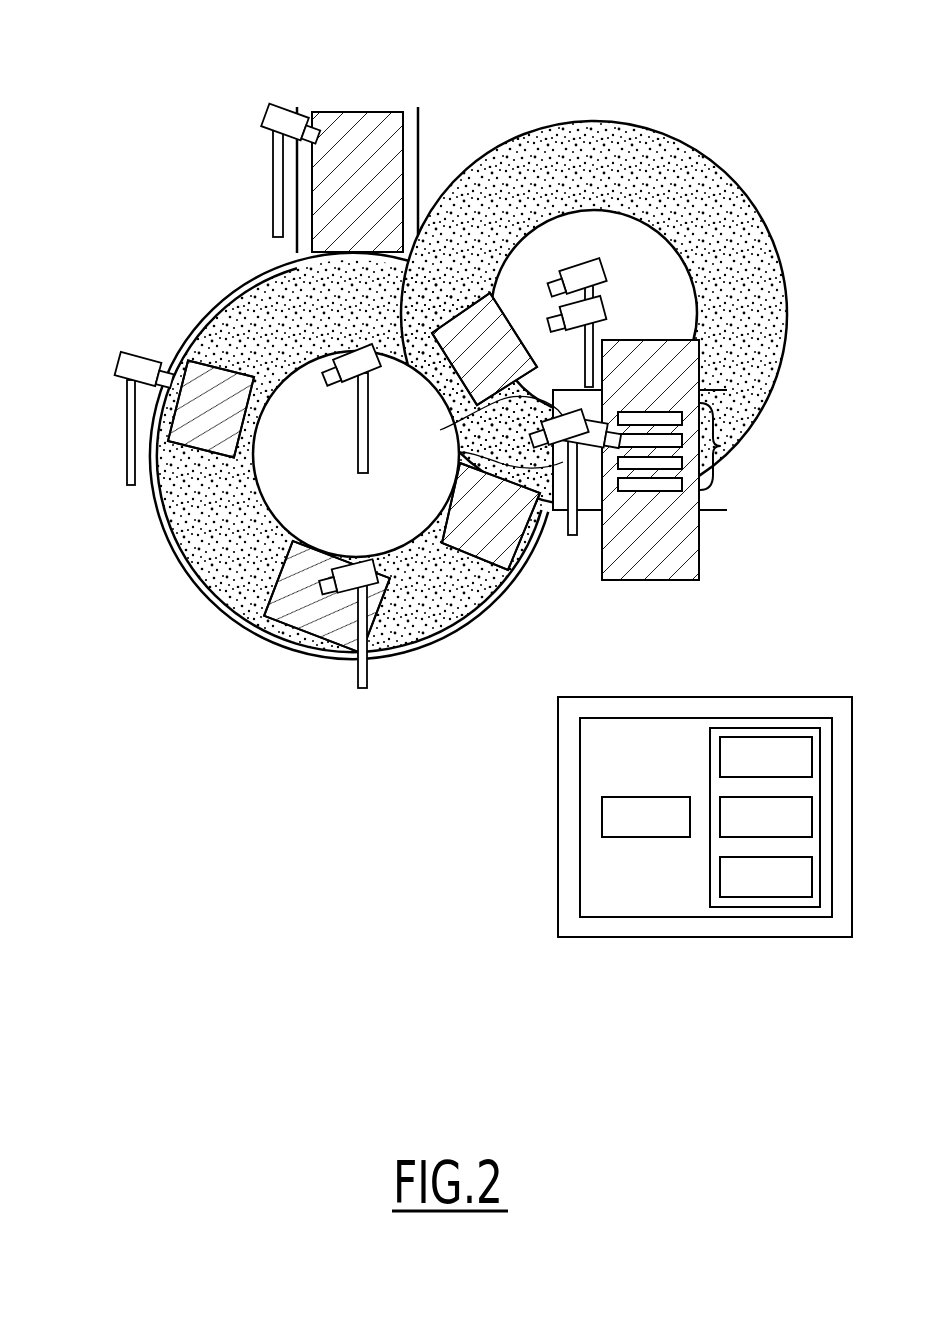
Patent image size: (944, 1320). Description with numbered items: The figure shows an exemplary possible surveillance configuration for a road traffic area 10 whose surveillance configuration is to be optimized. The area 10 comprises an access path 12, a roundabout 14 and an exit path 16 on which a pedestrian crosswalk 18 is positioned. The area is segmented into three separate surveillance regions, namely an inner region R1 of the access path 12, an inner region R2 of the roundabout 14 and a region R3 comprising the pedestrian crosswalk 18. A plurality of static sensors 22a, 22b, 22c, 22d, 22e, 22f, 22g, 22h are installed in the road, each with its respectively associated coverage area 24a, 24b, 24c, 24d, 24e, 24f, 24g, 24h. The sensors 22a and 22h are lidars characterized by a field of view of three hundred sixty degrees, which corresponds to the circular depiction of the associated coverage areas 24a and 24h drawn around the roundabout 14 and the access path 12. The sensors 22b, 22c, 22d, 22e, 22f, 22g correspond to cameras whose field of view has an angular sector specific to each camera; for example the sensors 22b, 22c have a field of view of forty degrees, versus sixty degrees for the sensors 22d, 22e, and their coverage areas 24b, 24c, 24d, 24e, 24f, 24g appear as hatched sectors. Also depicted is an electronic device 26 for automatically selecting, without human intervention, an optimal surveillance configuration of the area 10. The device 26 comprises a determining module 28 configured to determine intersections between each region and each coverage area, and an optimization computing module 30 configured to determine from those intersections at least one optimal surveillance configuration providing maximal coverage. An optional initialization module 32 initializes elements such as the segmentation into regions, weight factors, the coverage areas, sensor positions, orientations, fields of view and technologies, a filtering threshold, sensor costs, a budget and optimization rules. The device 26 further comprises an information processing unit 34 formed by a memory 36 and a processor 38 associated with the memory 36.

The road traffic area 10 is at (419, 357).
The access path 12 is at (418, 152).
The roundabout 14 is at (190, 340).
The exit path 16 is at (716, 512).
The pedestrian crosswalk 18 is at (722, 447).
The sensor 22a is at (346, 378).
The sensor 22b is at (465, 452).
The sensor 22c is at (440, 430).
The sensor 22d is at (600, 273).
The sensor 22e is at (266, 128).
The sensor 22f is at (116, 364).
The sensor 22g is at (344, 565).
The sensor 22h is at (607, 315).
The coverage area 24a is at (294, 310).
The coverage area 24b is at (650, 460).
The coverage area 24c is at (491, 516).
The coverage area 24d is at (484, 349).
The coverage area 24e is at (357, 182).
The coverage area 24f is at (211, 409).
The coverage area 24g is at (327, 597).
The coverage area 24h is at (617, 170).
The electronic device 26 is at (705, 807).
The determining module 28 is at (766, 757).
The optimization computing module 30 is at (766, 817).
The initialization module 32 is at (766, 877).
The information processing unit 34 is at (660, 918).
The memory 36 is at (771, 908).
The processor 38 is at (646, 817).
The inner region of the access path R1 is at (392, 82).
The inner region of the roundabout R2 is at (455, 630).
The region comprising the pedestrian crosswalk R3 is at (650, 420).